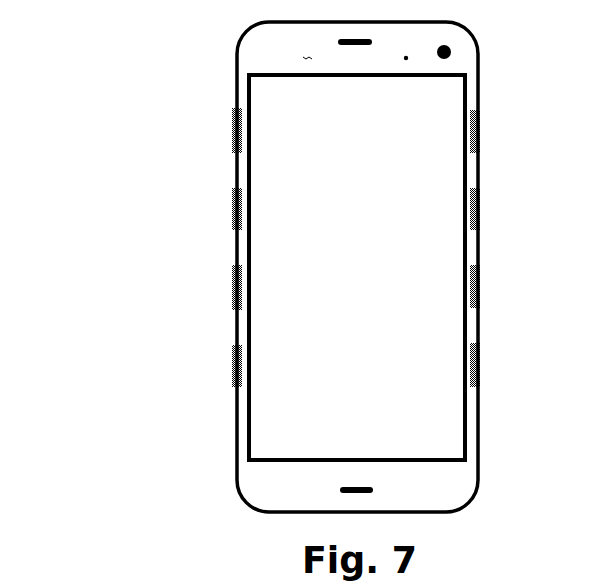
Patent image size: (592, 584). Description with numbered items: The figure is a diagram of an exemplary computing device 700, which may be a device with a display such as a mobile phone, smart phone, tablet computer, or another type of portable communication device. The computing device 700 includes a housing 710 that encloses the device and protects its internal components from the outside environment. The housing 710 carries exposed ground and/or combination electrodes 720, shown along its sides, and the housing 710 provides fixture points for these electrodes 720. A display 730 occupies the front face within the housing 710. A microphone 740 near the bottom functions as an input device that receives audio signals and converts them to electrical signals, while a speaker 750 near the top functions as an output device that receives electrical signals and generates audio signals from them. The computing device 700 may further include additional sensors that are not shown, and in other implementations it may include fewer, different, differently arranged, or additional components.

The computing device 700 is at (120, 30).
The housing 710 is at (480, 45).
The exposed ground and/or combination electrodes 720 is at (222, 112).
The display 730 is at (453, 432).
The microphone 740 is at (333, 490).
The speaker 750 is at (330, 43).